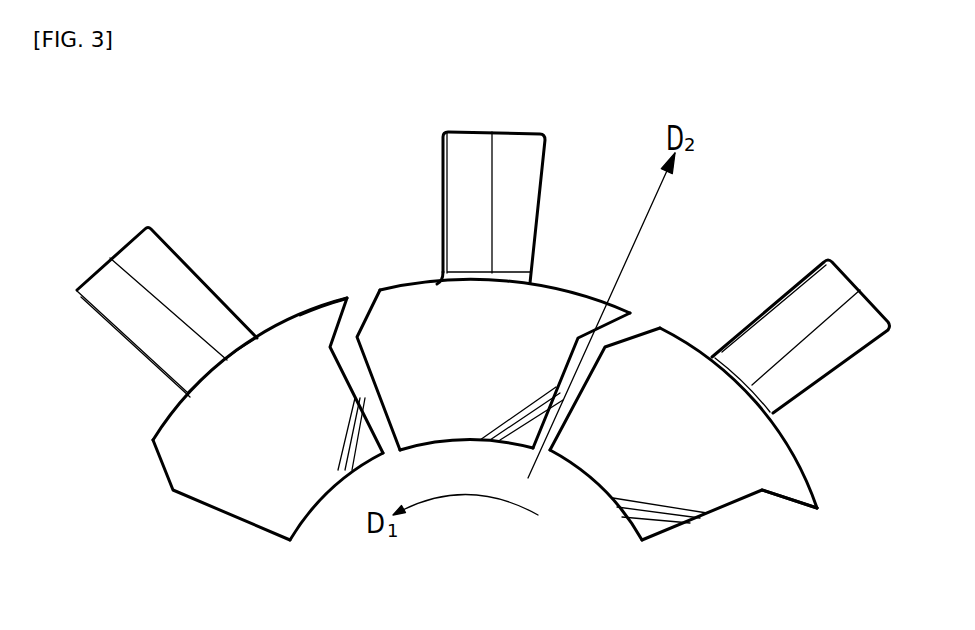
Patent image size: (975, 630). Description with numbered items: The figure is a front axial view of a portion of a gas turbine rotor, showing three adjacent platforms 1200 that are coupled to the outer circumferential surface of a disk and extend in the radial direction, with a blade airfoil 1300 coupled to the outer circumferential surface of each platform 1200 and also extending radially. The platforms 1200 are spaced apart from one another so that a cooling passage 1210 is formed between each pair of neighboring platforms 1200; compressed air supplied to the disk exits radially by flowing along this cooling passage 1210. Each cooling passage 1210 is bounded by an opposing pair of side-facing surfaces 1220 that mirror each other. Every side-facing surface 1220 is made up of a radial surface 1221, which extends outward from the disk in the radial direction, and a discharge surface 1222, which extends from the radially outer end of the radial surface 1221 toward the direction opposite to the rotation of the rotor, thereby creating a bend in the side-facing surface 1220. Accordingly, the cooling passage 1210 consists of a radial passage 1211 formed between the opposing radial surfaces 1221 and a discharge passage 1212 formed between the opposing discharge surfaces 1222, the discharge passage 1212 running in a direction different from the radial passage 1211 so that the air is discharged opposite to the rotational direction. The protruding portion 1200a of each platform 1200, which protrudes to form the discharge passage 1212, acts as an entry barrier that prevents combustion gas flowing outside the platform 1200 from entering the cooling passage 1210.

The platform 1200 is at (183, 470).
The protruding portion 1200a is at (323, 312).
The cooling passage 1210 is at (368, 394).
The radial passage 1211 is at (381, 416).
The discharge passage 1212 is at (362, 322).
The side-facing surface 1220 is at (742, 490).
The radial surface 1221 is at (575, 408).
The discharge surface 1222 is at (648, 328).
The blade airfoil 1300 is at (97, 320).